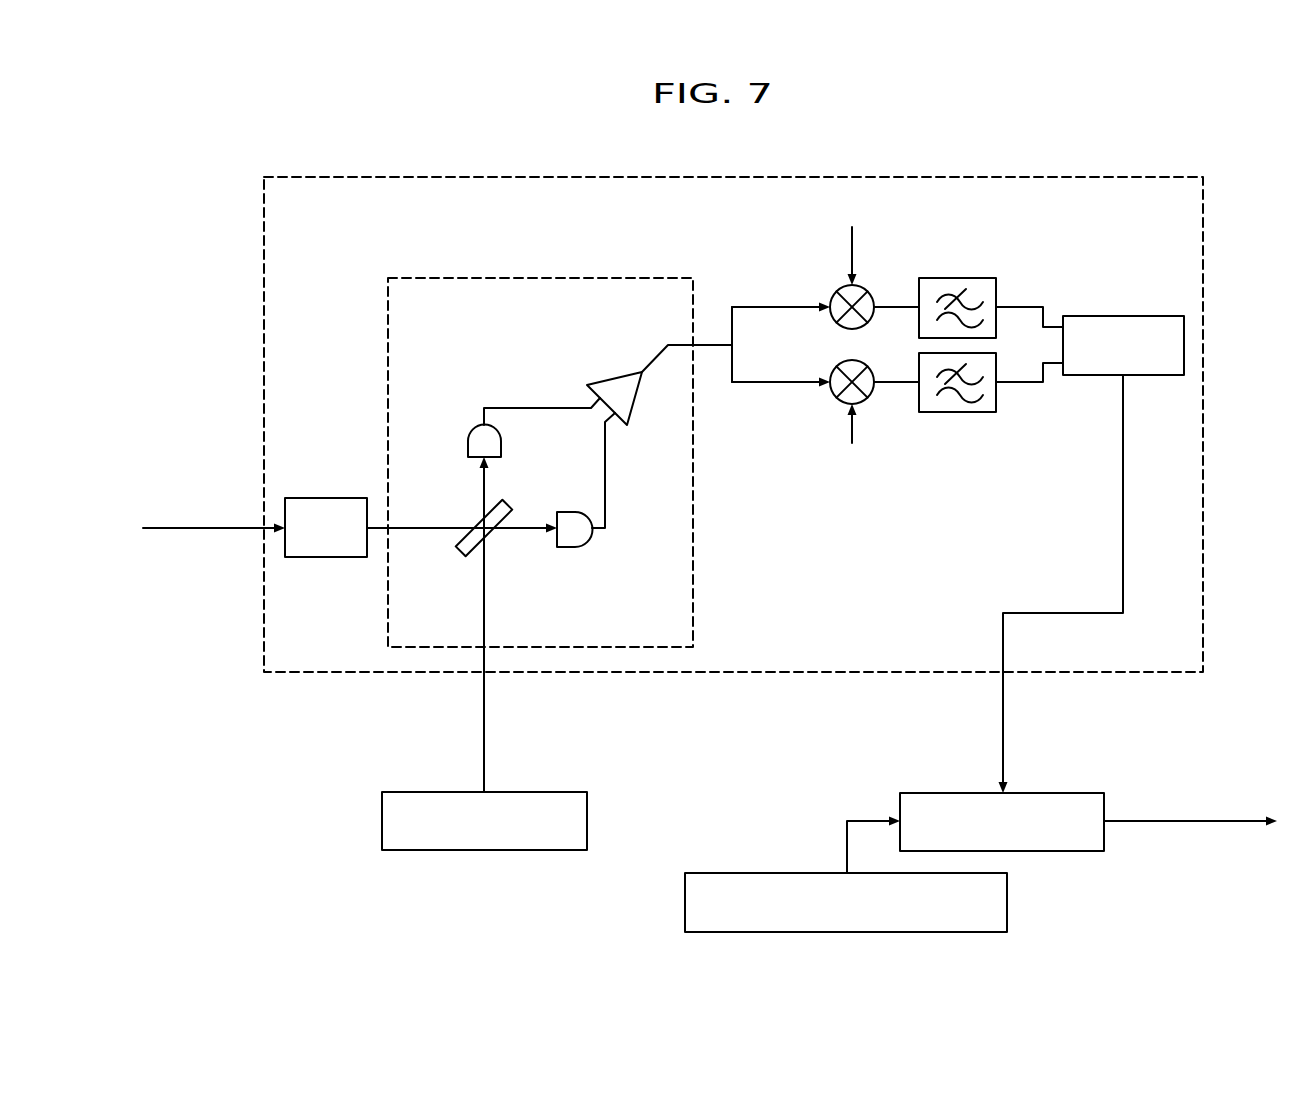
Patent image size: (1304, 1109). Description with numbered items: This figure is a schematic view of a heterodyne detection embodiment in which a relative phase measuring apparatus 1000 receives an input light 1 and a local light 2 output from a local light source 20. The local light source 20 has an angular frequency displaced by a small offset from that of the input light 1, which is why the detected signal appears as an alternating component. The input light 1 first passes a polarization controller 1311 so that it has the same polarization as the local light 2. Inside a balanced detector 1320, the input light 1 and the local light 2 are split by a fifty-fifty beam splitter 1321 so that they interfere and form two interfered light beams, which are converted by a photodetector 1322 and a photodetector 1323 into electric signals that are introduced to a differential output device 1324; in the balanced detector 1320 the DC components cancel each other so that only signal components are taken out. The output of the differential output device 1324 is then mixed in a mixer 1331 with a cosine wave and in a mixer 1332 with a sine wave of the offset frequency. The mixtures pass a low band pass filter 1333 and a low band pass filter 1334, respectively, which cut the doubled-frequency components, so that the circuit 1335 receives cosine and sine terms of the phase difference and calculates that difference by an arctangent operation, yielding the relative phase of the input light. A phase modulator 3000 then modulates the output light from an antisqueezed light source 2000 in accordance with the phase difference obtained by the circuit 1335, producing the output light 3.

The relative phase measuring apparatus 1000 is at (818, 177).
The balanced detector 1320 is at (695, 568).
The polarization controller 1311 is at (320, 498).
The 50:50 beam splitter 1321 is at (494, 551).
The photodetector 1322 is at (570, 548).
The photodetector 1323 is at (480, 425).
The differential output device 1324 is at (607, 378).
The mixer 1331 is at (841, 285).
The mixer 1332 is at (838, 401).
The low band pass filter 1333 is at (992, 278).
The low band pass filter 1334 is at (980, 412).
The circuit 1335 is at (1123, 316).
The input light 1 is at (180, 531).
The local light 2 is at (483, 726).
The local light source 20 is at (382, 823).
The antisqueezed light source 2000 is at (686, 910).
The phase modulator 3000 is at (1060, 793).
The output light 3 is at (1212, 821).